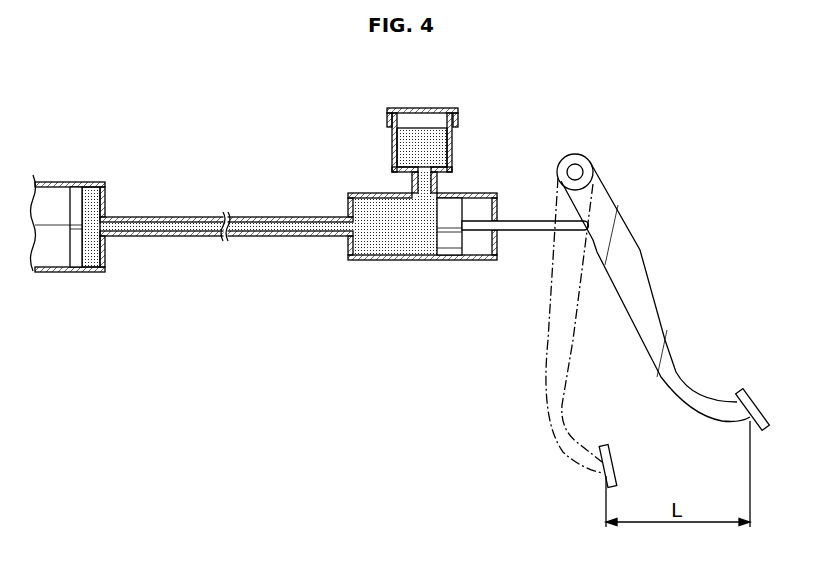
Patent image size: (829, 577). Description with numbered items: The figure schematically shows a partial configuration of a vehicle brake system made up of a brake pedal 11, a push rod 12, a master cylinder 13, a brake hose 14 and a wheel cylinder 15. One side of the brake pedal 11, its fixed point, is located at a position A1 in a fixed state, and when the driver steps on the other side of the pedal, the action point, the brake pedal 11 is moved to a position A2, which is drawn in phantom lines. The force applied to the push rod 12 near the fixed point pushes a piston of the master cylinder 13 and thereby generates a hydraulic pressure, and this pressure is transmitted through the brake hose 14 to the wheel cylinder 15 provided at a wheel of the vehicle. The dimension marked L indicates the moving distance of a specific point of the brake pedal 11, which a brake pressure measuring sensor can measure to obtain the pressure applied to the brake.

The brake pedal 11 is at (635, 262).
The push rod 12 is at (522, 220).
The master cylinder 13 is at (479, 152).
The brake hose 14 is at (261, 204).
The wheel cylinder 15 is at (96, 169).
The position A1 is at (663, 292).
The position A2 is at (577, 408).